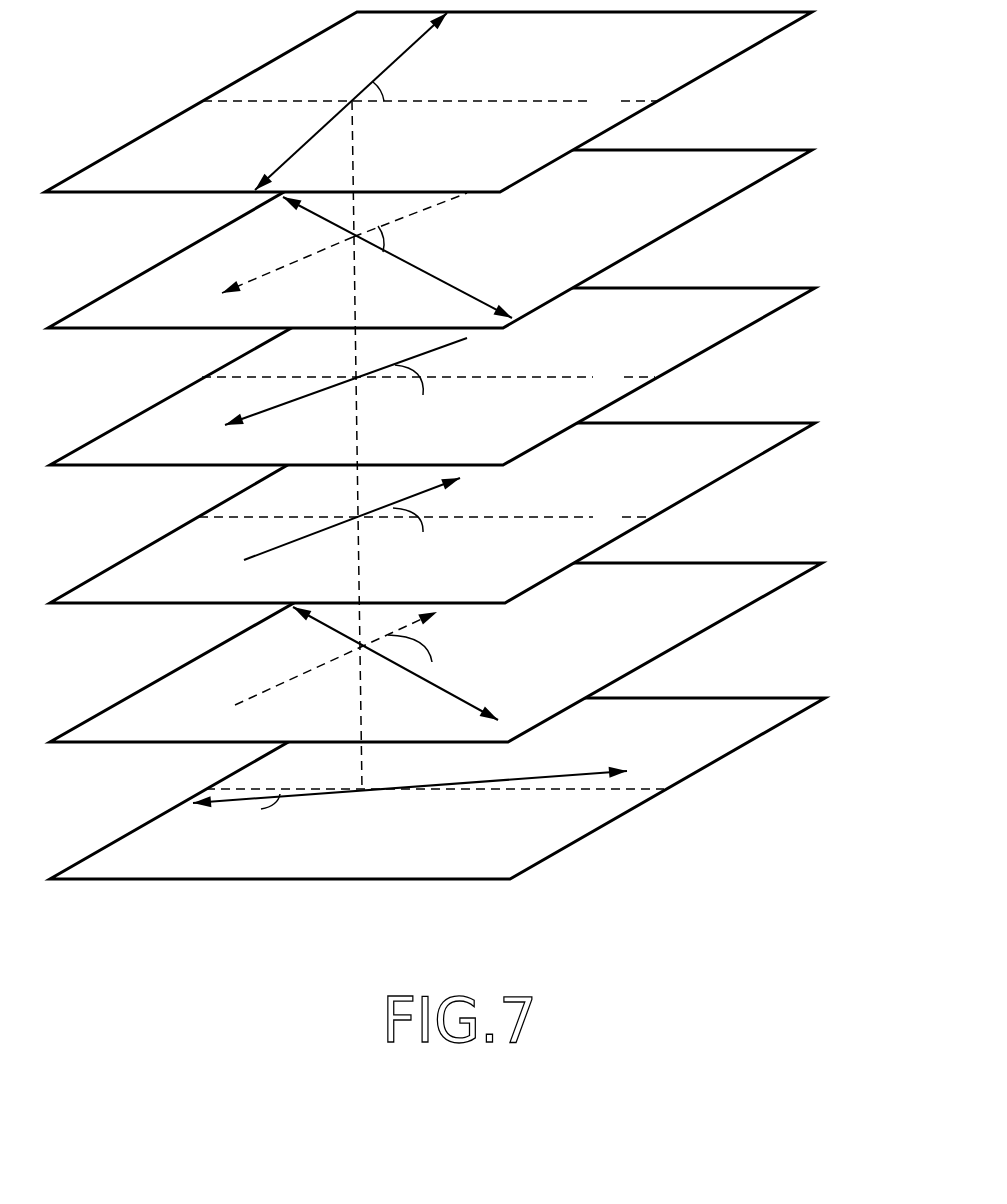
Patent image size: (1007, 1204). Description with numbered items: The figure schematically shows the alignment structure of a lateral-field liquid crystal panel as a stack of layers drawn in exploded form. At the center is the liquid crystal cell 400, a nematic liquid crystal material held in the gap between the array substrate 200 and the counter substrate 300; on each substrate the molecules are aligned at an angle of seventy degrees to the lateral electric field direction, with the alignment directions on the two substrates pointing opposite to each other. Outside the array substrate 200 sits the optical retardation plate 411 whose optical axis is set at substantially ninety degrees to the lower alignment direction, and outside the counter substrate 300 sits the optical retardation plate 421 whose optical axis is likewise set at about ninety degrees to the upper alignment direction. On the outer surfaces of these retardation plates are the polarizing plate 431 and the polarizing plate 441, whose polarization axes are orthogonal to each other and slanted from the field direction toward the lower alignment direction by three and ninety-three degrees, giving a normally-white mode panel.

The polarizing plate 441 is at (765, 25).
The optical retardation plate 421 is at (765, 163).
The counter substrate 300 is at (820, 424).
The liquid crystal cell 400 is at (477, 421).
The array substrate 200 is at (773, 437).
The optical retardation plate 411 is at (773, 577).
The polarizing plate 431 is at (780, 722).